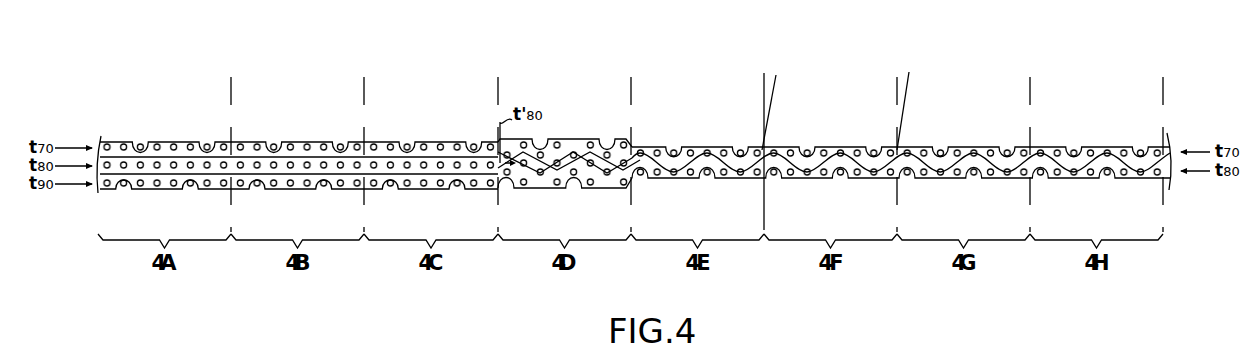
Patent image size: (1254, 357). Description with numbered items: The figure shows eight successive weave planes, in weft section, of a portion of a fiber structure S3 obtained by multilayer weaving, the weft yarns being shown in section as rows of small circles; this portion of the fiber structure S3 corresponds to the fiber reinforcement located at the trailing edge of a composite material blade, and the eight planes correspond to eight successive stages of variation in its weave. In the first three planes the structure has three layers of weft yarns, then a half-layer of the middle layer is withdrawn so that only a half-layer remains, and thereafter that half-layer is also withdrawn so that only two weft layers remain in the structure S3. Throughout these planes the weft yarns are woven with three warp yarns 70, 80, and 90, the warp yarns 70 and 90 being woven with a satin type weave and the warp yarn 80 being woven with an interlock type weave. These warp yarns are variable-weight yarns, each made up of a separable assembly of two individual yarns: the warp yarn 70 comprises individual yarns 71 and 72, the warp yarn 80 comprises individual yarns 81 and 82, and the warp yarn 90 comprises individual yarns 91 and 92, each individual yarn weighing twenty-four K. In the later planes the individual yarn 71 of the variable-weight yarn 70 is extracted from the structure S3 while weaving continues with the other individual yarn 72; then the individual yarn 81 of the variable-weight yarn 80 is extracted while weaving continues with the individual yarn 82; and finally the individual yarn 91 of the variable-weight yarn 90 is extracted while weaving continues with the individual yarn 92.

The warp yarn 70 is at (115, 142).
The individual yarn 71 is at (776, 78).
The individual yarn 72 is at (785, 147).
The warp yarn 80 is at (137, 150).
The individual yarn 81 is at (909, 78).
The individual yarn 82 is at (925, 170).
The warp yarn 90 is at (147, 190).
The individual yarn 91 is at (1015, 178).
The individual yarn 92 is at (1061, 179).
The fiber structure S3 is at (687, 70).